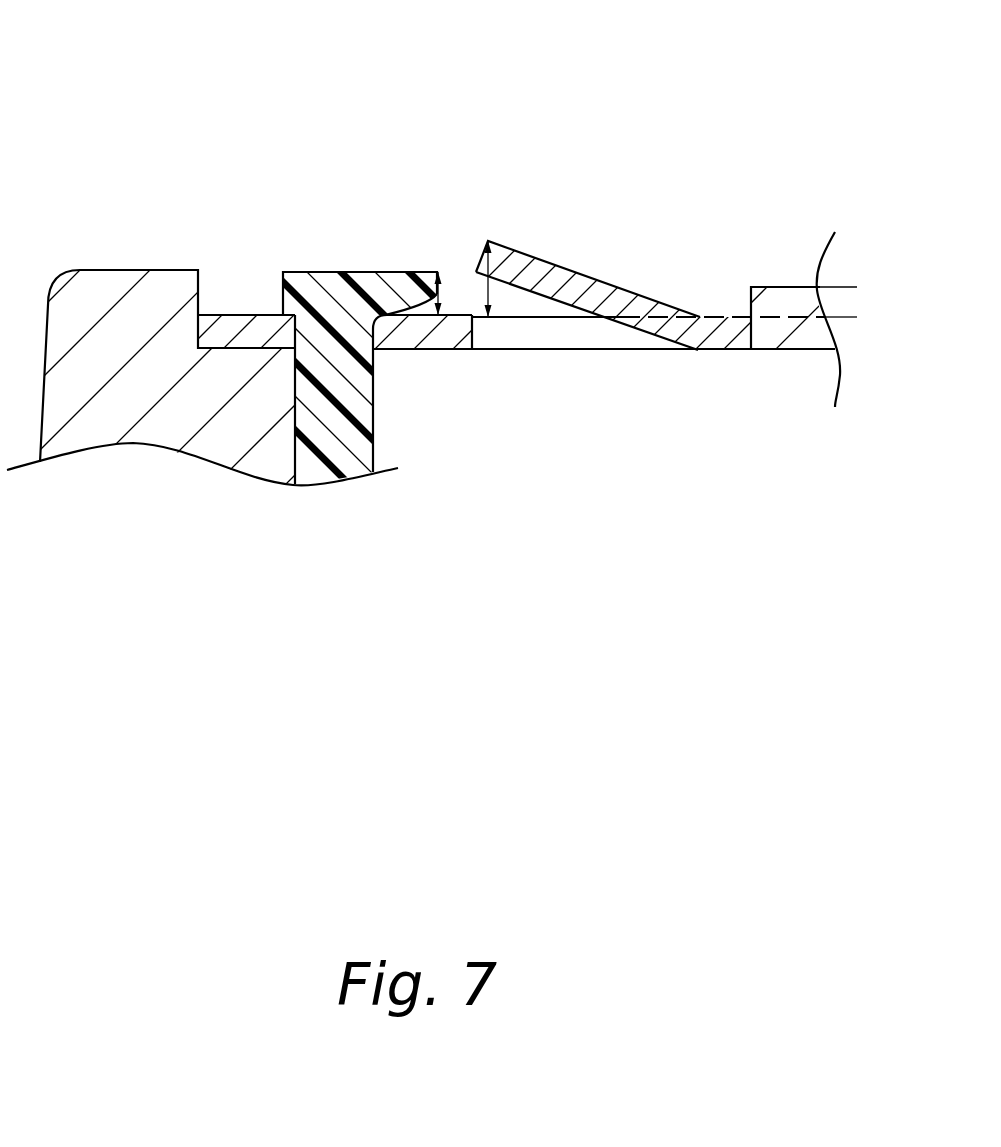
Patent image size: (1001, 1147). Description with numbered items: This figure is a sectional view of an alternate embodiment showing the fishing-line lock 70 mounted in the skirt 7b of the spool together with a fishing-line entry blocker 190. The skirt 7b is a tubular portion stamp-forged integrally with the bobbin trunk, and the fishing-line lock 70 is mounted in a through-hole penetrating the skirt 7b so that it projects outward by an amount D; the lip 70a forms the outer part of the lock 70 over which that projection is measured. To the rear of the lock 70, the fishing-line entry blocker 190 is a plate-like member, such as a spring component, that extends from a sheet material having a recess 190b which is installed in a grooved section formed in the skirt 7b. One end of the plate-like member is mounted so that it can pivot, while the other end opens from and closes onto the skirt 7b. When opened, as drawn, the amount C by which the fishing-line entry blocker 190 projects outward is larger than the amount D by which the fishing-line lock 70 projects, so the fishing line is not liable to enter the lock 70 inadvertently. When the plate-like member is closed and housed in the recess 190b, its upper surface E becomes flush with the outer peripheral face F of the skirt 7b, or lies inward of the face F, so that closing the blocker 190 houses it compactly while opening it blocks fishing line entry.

The fishing-line lock 70 is at (347, 271).
The lip portion of seal member 70a is at (398, 271).
The fishing-line entry blocker 190 is at (533, 257).
The recess 190b is at (472, 338).
The skirt 7b is at (782, 287).
The amount by which the fishing-line entry blocker projects outward C is at (488, 292).
The amount by which the fishing-line lock projects D is at (438, 296).
The upper surface of the fishing-line entry blocker E is at (756, 325).
The outer peripheral face of the skirt F is at (854, 283).